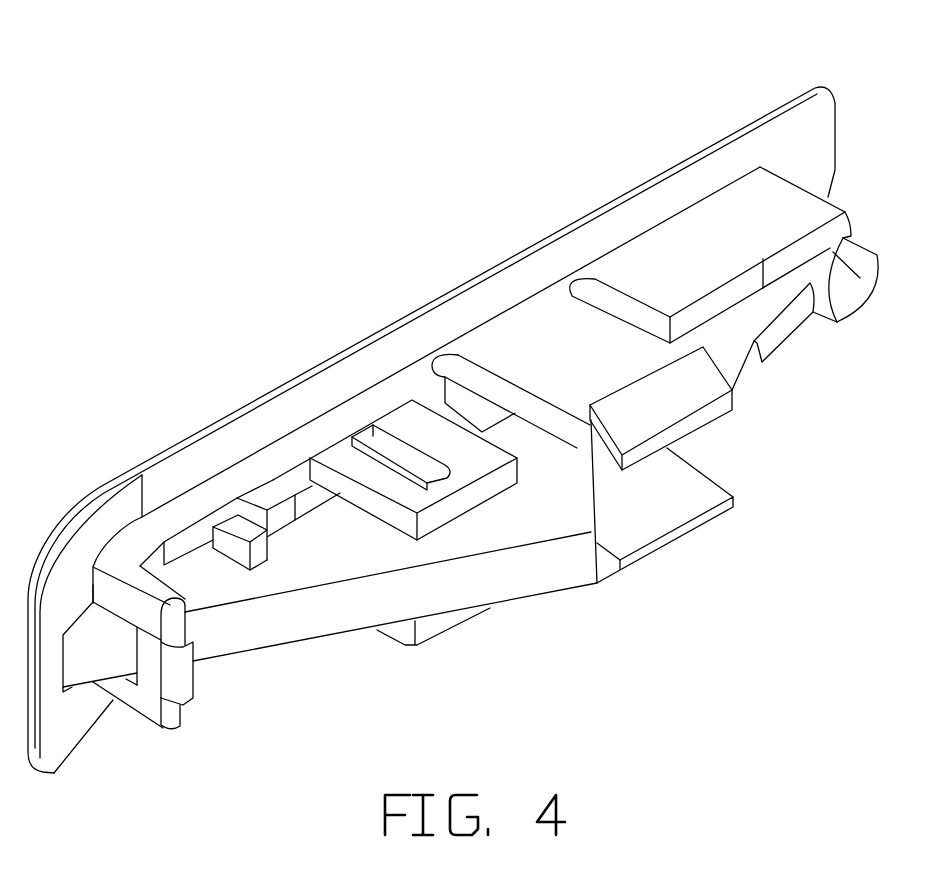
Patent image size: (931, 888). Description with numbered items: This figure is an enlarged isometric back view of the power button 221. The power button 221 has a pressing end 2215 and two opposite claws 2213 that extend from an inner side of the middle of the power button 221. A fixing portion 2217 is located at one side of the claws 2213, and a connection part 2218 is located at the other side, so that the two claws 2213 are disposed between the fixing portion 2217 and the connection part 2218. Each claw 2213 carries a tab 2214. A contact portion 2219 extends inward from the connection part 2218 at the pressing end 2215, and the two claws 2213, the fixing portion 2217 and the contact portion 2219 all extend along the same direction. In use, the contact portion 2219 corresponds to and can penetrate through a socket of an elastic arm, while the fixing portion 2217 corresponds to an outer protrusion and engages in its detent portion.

The power button 221 is at (355, 268).
The claws 2213 is at (577, 363).
The tab 2214 is at (600, 462).
The pressing end 2215 is at (727, 136).
The fixing portion 2217 is at (180, 676).
The connection part 2218 is at (678, 250).
The contact portion 2219 is at (850, 305).